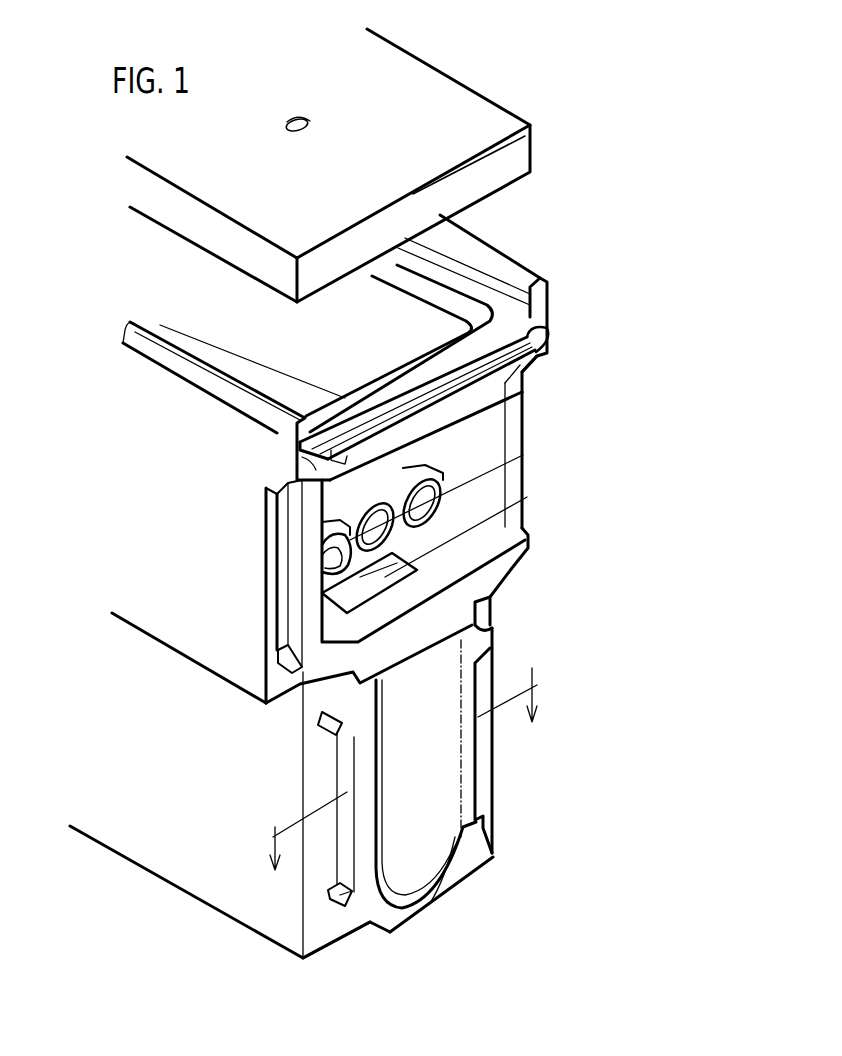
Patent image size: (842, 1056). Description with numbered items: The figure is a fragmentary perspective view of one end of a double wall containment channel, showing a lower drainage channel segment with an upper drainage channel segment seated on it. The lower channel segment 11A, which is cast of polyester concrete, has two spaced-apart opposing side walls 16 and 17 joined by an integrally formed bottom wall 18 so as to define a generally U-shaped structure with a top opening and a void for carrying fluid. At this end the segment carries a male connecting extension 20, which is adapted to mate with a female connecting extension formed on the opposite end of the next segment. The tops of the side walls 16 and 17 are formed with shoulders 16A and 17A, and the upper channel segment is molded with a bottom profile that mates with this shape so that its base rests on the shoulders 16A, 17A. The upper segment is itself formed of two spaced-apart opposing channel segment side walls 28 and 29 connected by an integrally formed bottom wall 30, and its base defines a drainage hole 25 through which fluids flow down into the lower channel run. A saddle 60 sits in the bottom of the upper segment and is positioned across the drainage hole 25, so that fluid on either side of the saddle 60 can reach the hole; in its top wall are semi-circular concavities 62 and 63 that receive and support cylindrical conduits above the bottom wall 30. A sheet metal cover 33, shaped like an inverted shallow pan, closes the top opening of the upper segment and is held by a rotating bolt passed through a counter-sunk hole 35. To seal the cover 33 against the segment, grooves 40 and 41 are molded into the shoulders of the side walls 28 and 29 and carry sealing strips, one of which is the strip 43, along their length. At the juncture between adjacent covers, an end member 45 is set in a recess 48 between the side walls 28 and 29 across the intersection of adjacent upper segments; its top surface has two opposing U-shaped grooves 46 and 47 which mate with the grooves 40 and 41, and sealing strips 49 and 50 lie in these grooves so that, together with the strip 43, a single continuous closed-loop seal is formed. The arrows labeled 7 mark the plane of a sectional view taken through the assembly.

The cover 33 is at (423, 92).
The counter-sunk hole 35 is at (290, 120).
The groove 40 is at (125, 340).
The sealing strip 43 is at (513, 305).
The groove 41 is at (443, 292).
The end member 45 is at (553, 322).
The sealing strip 50 is at (553, 328).
The U-shaped groove 47 is at (530, 385).
The channel segment side wall 29 is at (493, 418).
The sealing strip 49 is at (356, 393).
The U-shaped groove 46 is at (332, 402).
The recess 48 is at (307, 467).
The bottom wall 30 is at (455, 588).
The drainage hole 25 is at (450, 540).
The semi-circular concavity 63 is at (407, 480).
The saddle 60 is at (440, 530).
The semi-circular concavity 62 is at (345, 548).
The channel segment side wall 28 is at (110, 590).
The shoulder 16A is at (490, 622).
The channel segment 11A is at (493, 673).
The side wall 16 is at (450, 772).
The shoulder 17A is at (350, 712).
The side wall 17 is at (173, 858).
The bottom wall 18 is at (423, 870).
The male connecting extension 20 is at (380, 912).
The section line 7- 7 is at (407, 783).